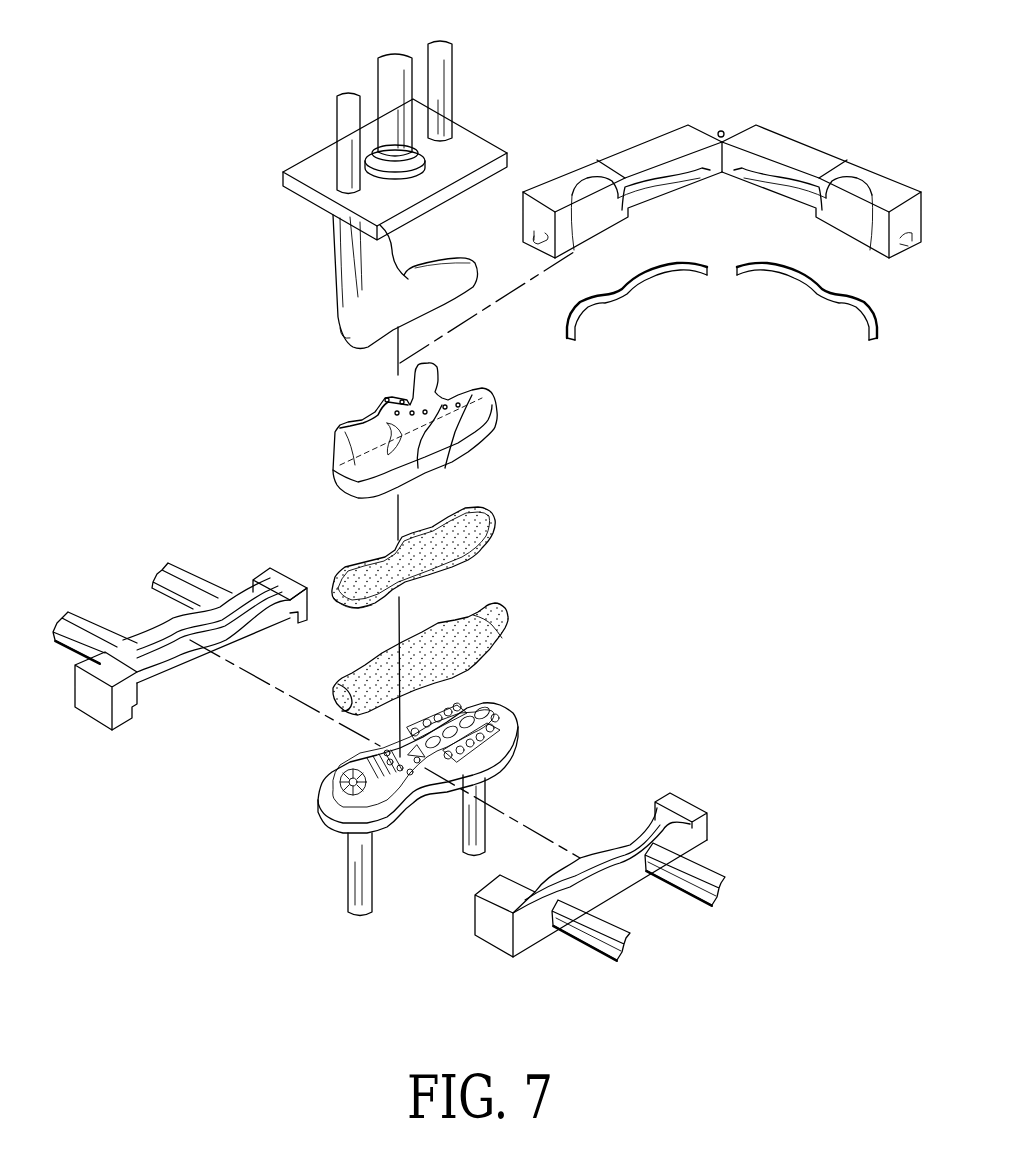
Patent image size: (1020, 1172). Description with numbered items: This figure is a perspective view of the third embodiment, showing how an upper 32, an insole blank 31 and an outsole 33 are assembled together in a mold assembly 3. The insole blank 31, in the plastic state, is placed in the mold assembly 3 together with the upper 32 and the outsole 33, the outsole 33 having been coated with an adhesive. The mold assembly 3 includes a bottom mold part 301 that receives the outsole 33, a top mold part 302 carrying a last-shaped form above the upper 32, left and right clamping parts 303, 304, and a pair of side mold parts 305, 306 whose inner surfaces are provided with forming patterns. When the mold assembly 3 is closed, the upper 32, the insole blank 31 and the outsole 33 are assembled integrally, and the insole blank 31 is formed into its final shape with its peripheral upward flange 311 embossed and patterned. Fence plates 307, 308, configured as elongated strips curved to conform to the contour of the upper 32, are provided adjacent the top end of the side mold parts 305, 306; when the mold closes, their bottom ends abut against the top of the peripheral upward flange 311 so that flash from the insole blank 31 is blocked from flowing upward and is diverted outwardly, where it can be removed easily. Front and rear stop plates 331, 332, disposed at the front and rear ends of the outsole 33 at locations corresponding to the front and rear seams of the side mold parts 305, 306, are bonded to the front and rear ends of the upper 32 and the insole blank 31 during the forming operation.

The mold assembly 3 is at (729, 101).
The bottom mold part 301 is at (332, 822).
The top mold part 302 is at (365, 303).
The left clamping part 303 is at (633, 163).
The right clamping part 304 is at (803, 158).
The side mold part 305 is at (237, 583).
The side mold part 306 is at (692, 817).
The fence plate 307 is at (645, 282).
The fence plate 308 is at (802, 287).
The insole blank 31 is at (465, 532).
The peripheral upward flange 311 is at (360, 607).
The upper 32 is at (473, 438).
The outsole 33 is at (460, 652).
The front stop plate 331 is at (507, 617).
The rear stop plate 332 is at (350, 695).